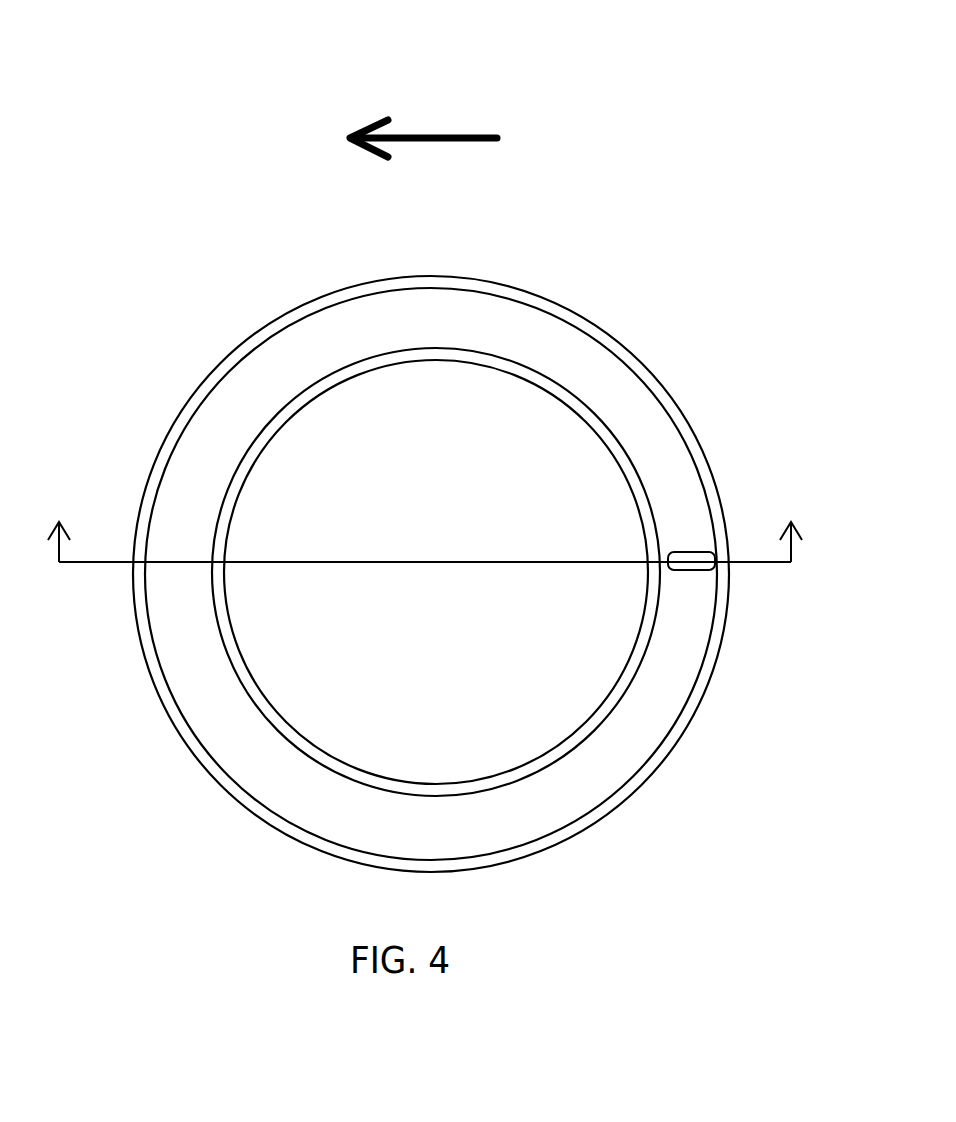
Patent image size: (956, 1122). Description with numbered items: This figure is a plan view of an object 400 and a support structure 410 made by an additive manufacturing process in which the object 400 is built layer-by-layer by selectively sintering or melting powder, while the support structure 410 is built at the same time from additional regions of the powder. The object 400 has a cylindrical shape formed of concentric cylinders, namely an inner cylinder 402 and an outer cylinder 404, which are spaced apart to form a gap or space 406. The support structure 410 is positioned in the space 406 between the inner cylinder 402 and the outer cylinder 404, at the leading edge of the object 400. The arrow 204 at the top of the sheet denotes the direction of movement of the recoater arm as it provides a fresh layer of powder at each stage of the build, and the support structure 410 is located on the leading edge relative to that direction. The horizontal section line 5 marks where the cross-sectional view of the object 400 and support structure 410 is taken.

The arrow 204 is at (447, 125).
The object 400 is at (225, 352).
The inner cylinder 402 is at (613, 437).
The outer cylinder 404 is at (589, 321).
The gap/space 406 is at (682, 675).
The support structure 410 is at (699, 549).
The line 5- 5 is at (425, 519).